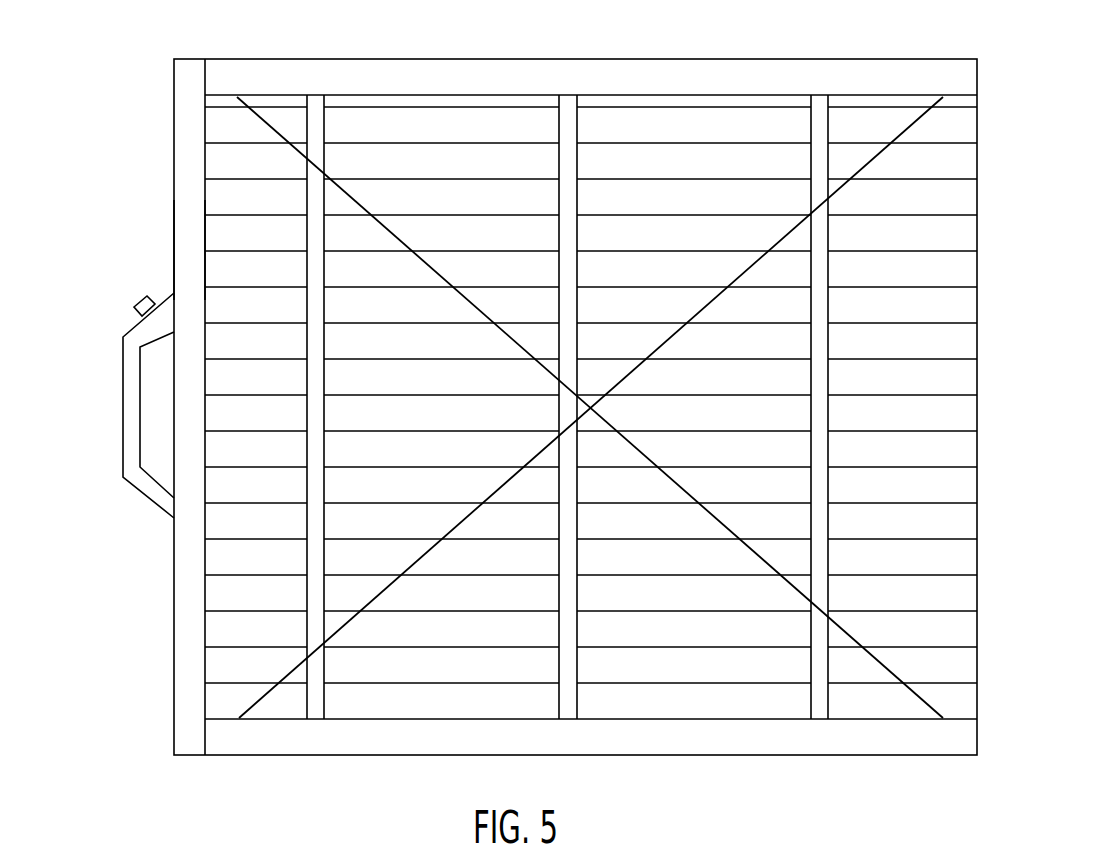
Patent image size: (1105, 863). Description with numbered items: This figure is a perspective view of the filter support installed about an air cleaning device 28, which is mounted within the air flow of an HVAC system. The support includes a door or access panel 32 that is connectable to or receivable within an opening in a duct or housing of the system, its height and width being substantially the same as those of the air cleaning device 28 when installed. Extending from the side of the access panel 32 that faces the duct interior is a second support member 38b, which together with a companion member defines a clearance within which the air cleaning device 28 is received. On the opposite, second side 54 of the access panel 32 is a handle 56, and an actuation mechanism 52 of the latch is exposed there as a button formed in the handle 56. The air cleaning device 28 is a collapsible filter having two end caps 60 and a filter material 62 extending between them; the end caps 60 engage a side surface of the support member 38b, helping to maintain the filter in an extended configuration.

The air cleaning device 28 is at (978, 167).
The access panel 32 is at (185, 107).
The second side 54 is at (175, 225).
The actuation mechanism 52 is at (137, 303).
The handle 56 is at (128, 412).
The end caps 60 is at (420, 75).
The filter material 62 is at (970, 409).
The second support member 38b is at (757, 258).